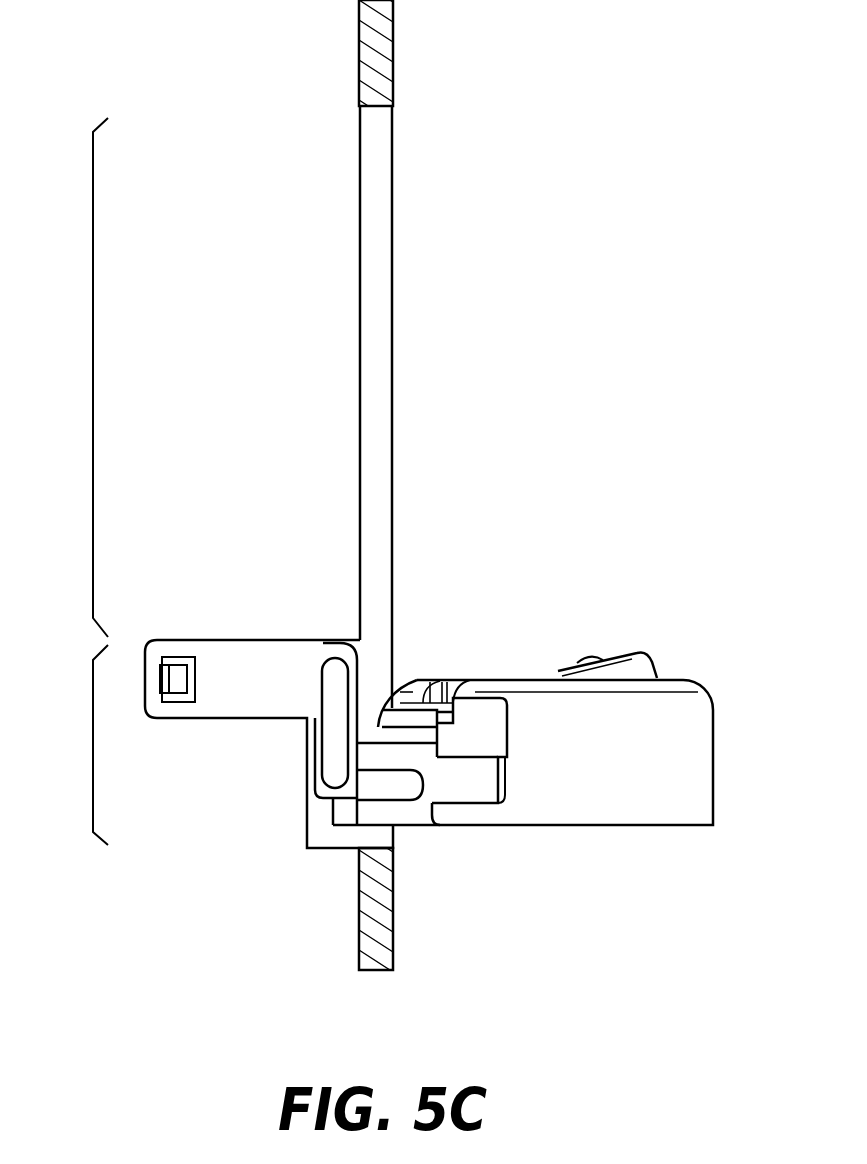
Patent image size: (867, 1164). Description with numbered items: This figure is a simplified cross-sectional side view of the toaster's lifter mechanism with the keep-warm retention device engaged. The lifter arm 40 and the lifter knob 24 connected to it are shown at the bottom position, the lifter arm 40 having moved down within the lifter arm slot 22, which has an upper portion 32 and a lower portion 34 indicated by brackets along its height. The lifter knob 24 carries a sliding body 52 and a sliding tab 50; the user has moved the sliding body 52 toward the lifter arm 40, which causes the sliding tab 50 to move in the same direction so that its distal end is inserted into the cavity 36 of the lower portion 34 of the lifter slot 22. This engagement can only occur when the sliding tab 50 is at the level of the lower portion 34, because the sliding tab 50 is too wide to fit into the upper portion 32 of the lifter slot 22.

The lifter arm slot 22 is at (385, 428).
The lifter knob 24 is at (693, 758).
The upper portion 32 is at (93, 443).
The lower portion 34 is at (93, 742).
The cavity 36 is at (368, 683).
The lifter arm 40 is at (287, 658).
The sliding tab 50 is at (378, 727).
The sliding body 52 is at (597, 653).